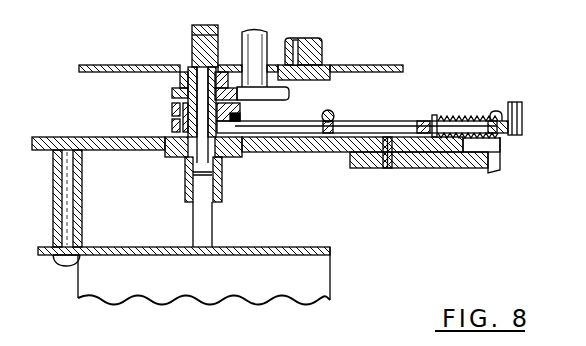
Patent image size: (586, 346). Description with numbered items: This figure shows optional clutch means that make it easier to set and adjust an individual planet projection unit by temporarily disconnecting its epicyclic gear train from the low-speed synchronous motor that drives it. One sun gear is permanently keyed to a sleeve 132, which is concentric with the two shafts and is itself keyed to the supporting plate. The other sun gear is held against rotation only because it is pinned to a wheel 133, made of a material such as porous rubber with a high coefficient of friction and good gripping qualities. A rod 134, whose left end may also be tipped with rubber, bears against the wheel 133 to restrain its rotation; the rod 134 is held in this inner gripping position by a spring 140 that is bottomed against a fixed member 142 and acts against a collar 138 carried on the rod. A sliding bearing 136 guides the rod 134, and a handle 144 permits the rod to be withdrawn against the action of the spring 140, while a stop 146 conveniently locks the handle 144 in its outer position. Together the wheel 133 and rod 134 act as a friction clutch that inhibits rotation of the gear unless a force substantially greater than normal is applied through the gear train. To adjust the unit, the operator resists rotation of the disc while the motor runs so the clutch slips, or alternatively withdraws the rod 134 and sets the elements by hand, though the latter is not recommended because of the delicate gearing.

The wheel 133 is at (170, 145).
The sleeve 132 is at (226, 158).
The rod 134 is at (289, 128).
The sliding bearing 136 is at (336, 134).
The collar 138 is at (433, 116).
The spring 140 is at (470, 121).
The fixed member 142 is at (498, 117).
The handle 144 is at (523, 113).
The stop 146 is at (500, 162).